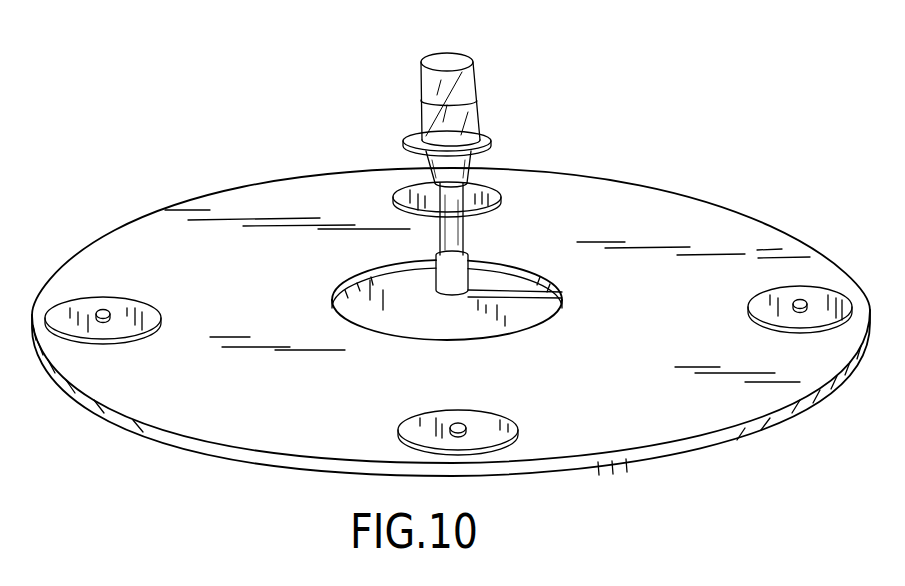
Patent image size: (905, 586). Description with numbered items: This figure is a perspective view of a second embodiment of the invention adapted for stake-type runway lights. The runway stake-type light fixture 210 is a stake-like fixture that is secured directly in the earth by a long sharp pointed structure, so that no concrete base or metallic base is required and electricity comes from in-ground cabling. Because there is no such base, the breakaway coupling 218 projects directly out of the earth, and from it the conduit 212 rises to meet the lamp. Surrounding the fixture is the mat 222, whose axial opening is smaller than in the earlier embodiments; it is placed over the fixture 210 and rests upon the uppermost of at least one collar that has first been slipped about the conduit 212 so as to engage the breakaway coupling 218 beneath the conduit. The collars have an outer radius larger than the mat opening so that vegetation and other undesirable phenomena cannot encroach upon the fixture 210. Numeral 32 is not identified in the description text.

The runway stake-type light fixture 210 is at (477, 84).
The conduit 212 is at (467, 238).
The breakaway coupling 218 is at (385, 276).
The mat 222 is at (738, 228).
The foot pad 32 is at (806, 321).